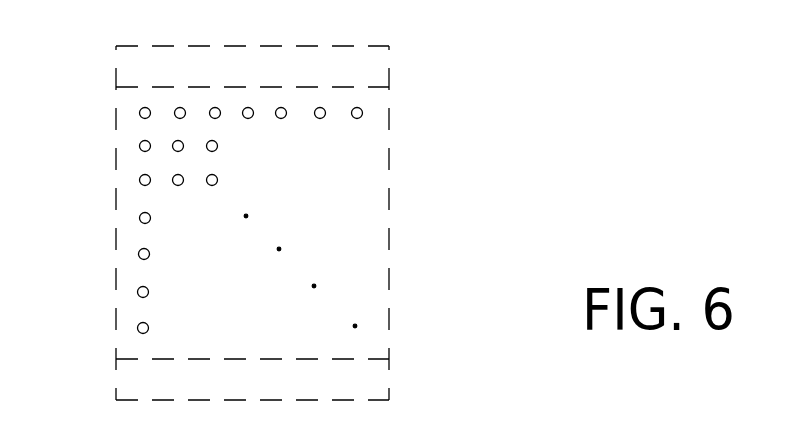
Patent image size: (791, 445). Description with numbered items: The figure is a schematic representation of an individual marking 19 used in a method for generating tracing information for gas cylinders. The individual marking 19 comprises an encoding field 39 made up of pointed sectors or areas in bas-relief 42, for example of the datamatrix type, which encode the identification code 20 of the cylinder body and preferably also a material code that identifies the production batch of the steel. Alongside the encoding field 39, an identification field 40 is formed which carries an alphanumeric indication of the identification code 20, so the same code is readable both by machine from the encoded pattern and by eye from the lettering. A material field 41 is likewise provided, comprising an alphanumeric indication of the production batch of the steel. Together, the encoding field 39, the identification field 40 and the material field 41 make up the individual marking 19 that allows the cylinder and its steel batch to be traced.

The individual marking 19 is at (412, 216).
The identification code 20 is at (290, 239).
The encoding field 39 is at (89, 88).
The identification field 40 is at (89, 46).
The material field 41 is at (89, 360).
The pointed sectors or areas in bas-relief 42 is at (324, 109).